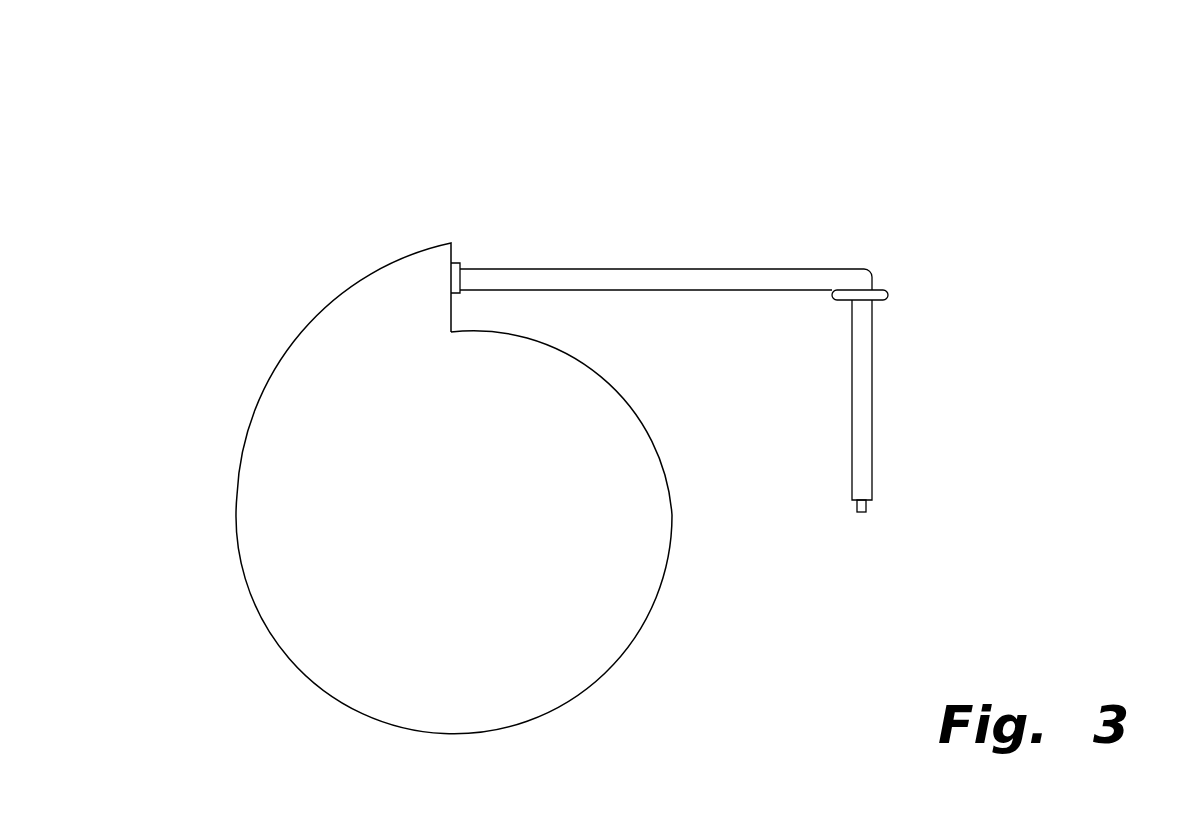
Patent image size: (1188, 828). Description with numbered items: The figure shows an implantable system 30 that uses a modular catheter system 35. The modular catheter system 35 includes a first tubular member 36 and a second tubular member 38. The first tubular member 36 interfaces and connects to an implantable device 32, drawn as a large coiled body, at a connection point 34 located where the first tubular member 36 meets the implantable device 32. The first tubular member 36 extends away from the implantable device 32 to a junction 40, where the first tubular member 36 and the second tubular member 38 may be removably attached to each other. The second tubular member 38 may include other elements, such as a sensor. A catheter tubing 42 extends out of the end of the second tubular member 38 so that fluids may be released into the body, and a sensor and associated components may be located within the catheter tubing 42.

The implantable system 30 is at (522, 82).
The implantable device 32 is at (243, 550).
The connection point 34 is at (462, 263).
The modular catheter system 35 is at (772, 195).
The first tubular member 36 is at (658, 270).
The second tubular member 38 is at (873, 377).
The junction 40 is at (872, 287).
The catheter tubing 42 is at (866, 512).